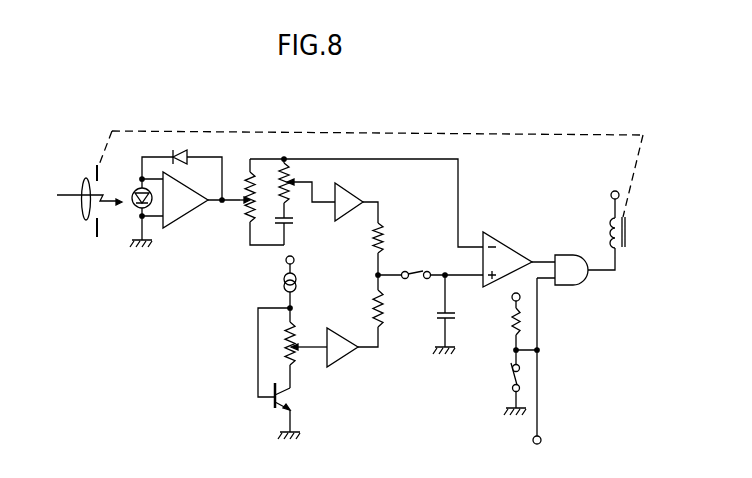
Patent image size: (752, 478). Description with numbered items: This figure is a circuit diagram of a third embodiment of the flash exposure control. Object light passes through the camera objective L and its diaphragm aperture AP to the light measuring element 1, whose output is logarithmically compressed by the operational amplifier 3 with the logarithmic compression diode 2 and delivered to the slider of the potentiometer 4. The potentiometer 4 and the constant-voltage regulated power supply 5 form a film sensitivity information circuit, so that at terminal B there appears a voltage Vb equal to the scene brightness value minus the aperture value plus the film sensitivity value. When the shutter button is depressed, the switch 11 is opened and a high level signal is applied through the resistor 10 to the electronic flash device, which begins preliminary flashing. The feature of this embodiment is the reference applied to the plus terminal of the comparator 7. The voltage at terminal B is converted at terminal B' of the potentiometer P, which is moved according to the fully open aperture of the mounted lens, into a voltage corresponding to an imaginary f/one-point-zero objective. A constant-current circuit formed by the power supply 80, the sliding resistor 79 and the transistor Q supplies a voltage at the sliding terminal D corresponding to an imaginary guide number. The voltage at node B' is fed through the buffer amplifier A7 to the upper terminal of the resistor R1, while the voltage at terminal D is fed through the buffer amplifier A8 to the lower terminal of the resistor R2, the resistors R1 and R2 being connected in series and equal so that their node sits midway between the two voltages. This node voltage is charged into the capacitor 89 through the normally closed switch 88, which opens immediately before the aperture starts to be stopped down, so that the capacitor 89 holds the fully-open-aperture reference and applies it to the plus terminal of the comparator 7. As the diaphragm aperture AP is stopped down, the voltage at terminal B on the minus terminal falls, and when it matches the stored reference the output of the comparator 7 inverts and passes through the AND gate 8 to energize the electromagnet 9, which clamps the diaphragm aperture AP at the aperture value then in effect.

The light measuring element 1 is at (132, 205).
The logarithmic compression diode 2 is at (188, 148).
The operational amplifier 3 is at (185, 218).
The potentiometer 4 is at (243, 205).
The constant-voltage regulated power supply 5 is at (290, 226).
The comparator 7 is at (512, 249).
The AND gate 8 is at (573, 254).
The electromagnet 9 is at (627, 232).
The resistor 10 is at (513, 322).
The switch 11 is at (512, 370).
The sliding resistor 79 is at (287, 336).
The power supply 80 is at (284, 276).
The switch 88 is at (432, 272).
The capacitor 89 is at (437, 322).
The diaphragm aperture AP is at (97, 170).
The camera objective L is at (82, 210).
The potentiometer P is at (285, 183).
The terminal B is at (294, 124).
The terminal B' is at (321, 144).
The buffer amplifier A7 is at (368, 178).
The buffer amplifier A8 is at (347, 353).
The resistor R1 is at (373, 243).
The resistor R2 is at (374, 312).
The sliding terminal D is at (318, 345).
The transistor Q is at (273, 402).